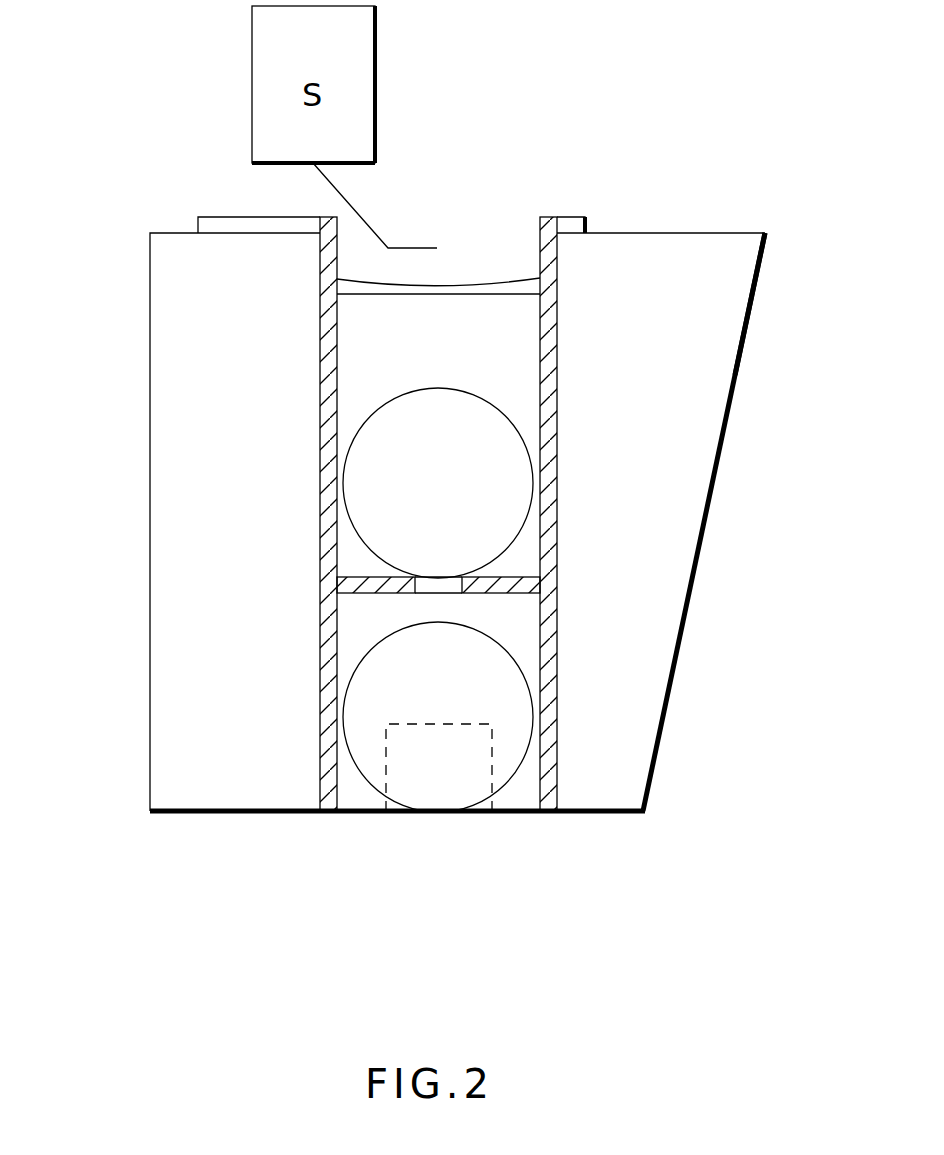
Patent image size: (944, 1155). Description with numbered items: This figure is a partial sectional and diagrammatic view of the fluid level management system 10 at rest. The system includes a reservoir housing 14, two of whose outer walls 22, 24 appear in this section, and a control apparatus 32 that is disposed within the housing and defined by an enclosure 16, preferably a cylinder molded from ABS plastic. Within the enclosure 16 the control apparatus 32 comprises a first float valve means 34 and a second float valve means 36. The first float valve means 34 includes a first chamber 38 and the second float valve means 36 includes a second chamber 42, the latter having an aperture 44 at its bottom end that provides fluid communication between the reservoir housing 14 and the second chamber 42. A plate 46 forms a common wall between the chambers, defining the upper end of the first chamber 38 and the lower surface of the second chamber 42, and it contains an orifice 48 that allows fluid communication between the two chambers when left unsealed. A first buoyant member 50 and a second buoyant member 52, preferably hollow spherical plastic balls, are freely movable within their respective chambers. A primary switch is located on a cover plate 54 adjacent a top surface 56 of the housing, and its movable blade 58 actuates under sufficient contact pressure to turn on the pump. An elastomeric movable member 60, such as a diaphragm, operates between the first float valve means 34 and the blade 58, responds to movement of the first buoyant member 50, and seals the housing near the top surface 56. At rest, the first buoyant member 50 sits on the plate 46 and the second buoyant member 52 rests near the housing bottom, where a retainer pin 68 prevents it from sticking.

The fluid level management system 10 is at (496, 135).
The reservoir housing 14 is at (677, 650).
The enclosure 16 is at (557, 350).
The outer wall 22 is at (745, 335).
The outer wall 24 is at (150, 418).
The control apparatus 32 is at (292, 538).
The first float valve means 34 is at (460, 504).
The second float valve means 36 is at (462, 701).
The first chamber 38 is at (360, 345).
The second chamber 42 is at (357, 623).
The aperture 44 is at (483, 813).
The plate 46 is at (512, 575).
The orifice 48 is at (443, 593).
The first buoyant member 50 is at (520, 437).
The second buoyant member 52 is at (522, 670).
The cover plate 54 is at (218, 217).
The top surface 56 is at (587, 265).
The movable blade 58 is at (343, 195).
The movable member 60 is at (490, 283).
The retainer pin 68 is at (367, 811).